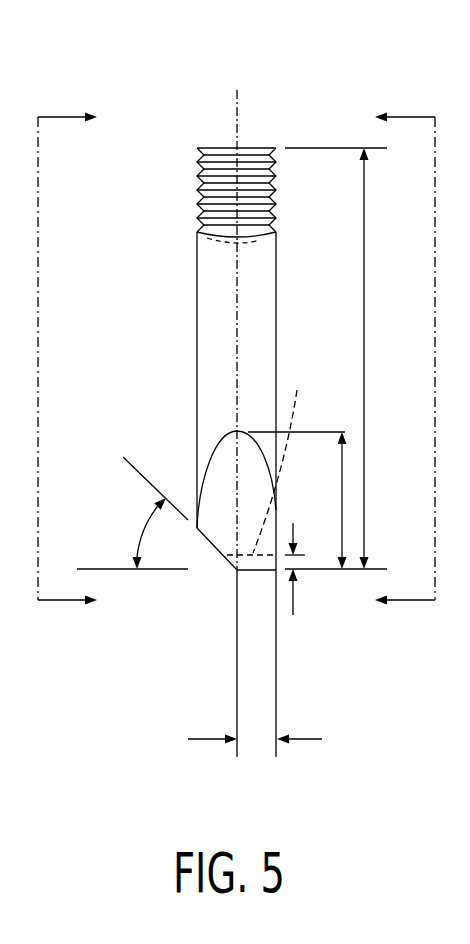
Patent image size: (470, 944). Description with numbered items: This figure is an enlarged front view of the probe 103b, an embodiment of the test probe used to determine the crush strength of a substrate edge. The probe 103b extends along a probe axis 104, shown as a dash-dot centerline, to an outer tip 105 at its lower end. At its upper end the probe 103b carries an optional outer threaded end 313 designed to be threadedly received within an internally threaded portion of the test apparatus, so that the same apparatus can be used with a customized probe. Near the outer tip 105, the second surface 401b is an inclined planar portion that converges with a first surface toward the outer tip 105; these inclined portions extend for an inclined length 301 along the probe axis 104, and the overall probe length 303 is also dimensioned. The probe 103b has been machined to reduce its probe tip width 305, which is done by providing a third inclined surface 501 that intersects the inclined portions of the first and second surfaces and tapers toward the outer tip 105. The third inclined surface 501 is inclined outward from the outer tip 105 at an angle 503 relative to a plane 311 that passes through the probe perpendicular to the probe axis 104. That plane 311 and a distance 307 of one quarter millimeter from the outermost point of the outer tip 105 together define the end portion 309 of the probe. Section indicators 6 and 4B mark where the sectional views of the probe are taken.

The probe axis 104 is at (247, 116).
The outer threaded end 313 is at (198, 198).
The probe 103b is at (196, 363).
The second surface 401b is at (227, 471).
The third inclined surface 501 is at (215, 551).
The outer tip 105 is at (247, 571).
The end portion 309 is at (238, 572).
The plane 311 is at (281, 455).
The probe length 303 is at (365, 392).
The inclined length 301 is at (342, 503).
The distance 307 is at (293, 523).
The probe tip width 305 is at (307, 740).
The angle 503 is at (143, 526).
The section line 6- 6 is at (78, 359).
The section line 4B- 4B is at (386, 361).